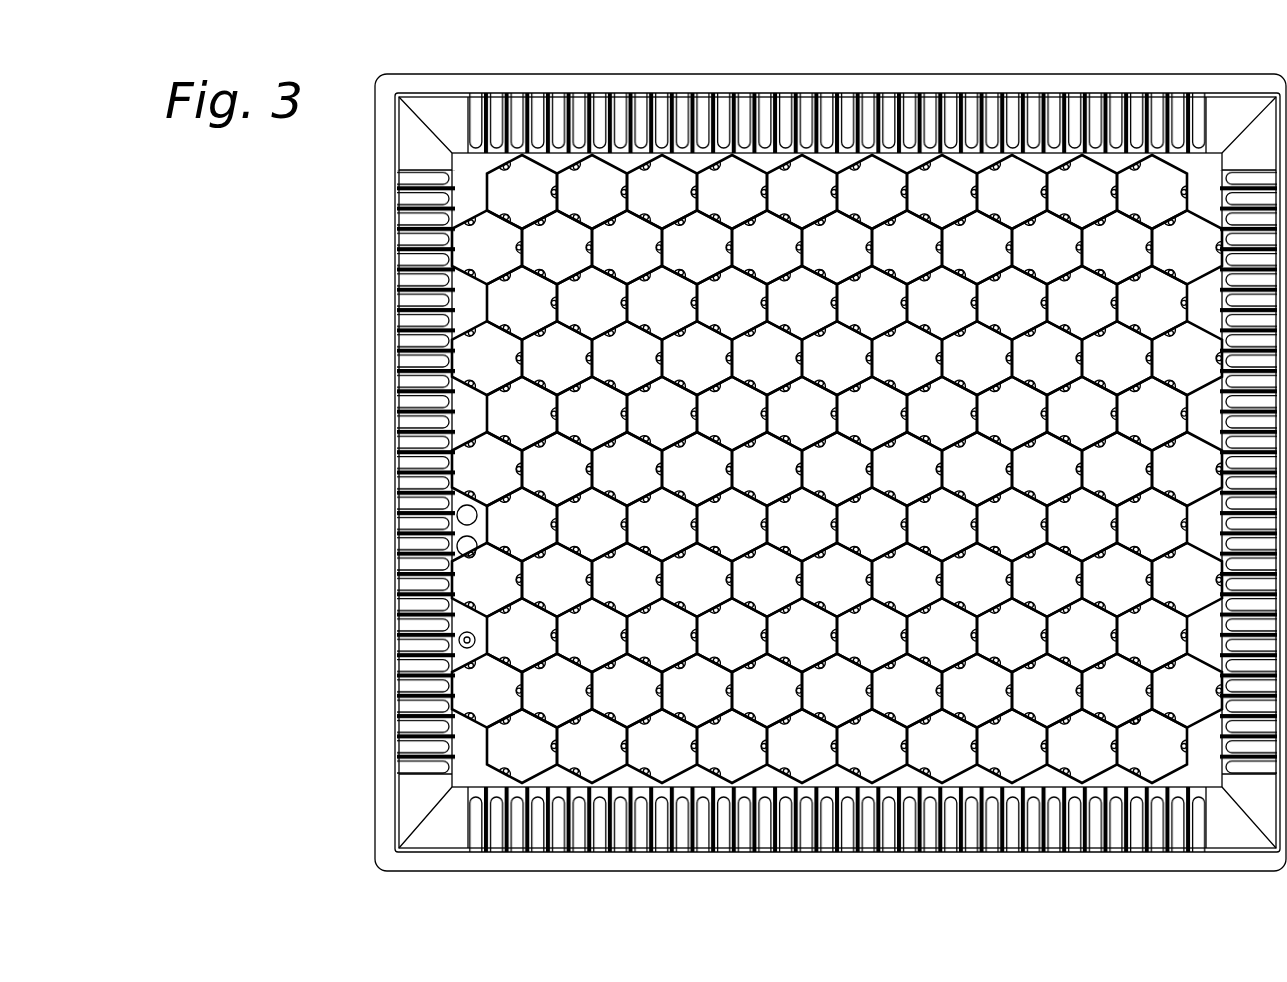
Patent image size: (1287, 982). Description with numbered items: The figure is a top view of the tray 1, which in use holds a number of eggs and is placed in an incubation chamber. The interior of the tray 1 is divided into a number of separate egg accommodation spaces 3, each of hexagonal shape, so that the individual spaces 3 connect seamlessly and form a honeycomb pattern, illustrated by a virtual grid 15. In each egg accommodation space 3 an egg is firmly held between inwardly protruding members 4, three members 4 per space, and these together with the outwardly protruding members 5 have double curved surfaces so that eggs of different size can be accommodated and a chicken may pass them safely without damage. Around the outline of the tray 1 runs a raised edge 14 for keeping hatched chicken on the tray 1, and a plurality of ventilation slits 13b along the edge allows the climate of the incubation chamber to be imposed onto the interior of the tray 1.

The tray 1 is at (764, 68).
The egg accommodation space 3 is at (1082, 185).
The inwardly protruding member 4 is at (1138, 720).
The outwardly protruding member 5 is at (1168, 723).
The ventilation slit 13b is at (1198, 110).
The raised edge 14 is at (465, 85).
The virtual grid 15 is at (1028, 780).